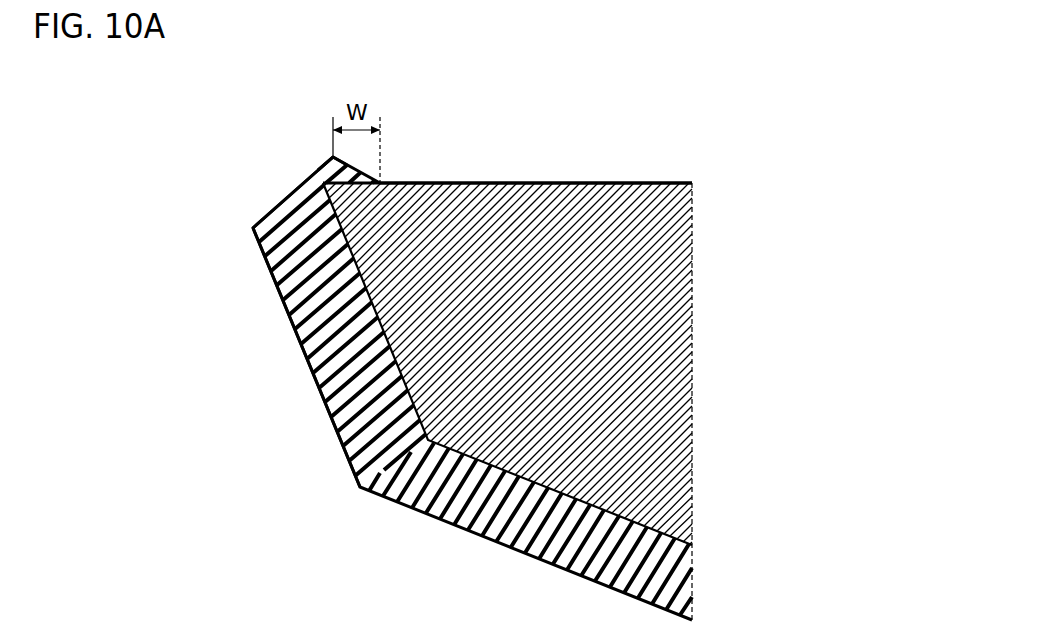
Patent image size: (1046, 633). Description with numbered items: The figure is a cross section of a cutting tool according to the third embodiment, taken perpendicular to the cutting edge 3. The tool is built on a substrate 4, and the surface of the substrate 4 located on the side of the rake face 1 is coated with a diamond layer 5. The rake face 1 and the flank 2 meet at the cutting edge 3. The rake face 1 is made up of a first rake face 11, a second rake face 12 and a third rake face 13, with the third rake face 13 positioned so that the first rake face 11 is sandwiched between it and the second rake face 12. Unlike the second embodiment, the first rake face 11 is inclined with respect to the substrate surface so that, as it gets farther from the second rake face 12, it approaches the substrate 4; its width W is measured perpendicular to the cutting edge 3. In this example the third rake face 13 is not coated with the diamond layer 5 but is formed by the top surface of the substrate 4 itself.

The rake face 1 is at (533, 63).
The flank 2 is at (297, 333).
The cutting edge 3 is at (253, 229).
The substrate 4 is at (668, 323).
The diamond layer 5 is at (680, 582).
The first rake face 11 is at (325, 158).
The second rake face 12 is at (302, 183).
The third rake face 13 is at (540, 182).